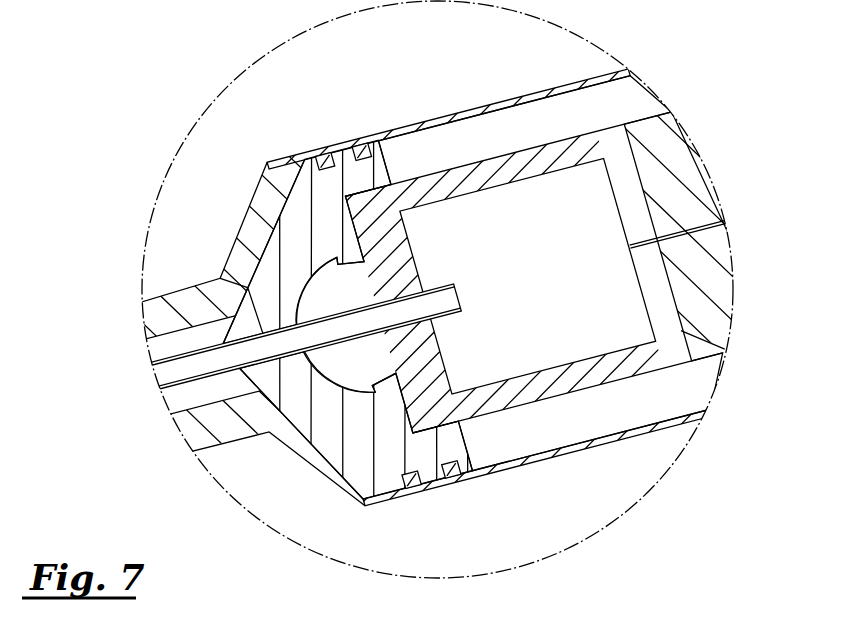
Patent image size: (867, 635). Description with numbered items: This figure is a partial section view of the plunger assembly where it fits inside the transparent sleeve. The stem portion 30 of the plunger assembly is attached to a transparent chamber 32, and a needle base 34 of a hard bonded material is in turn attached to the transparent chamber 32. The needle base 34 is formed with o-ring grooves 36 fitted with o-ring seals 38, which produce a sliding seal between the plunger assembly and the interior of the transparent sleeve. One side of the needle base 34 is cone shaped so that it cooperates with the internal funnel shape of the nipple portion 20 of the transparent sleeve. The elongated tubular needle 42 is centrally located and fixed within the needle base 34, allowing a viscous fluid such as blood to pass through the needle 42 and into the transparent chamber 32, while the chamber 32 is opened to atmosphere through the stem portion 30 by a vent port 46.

The nipple portion 20 is at (227, 437).
The stem portion 30 is at (702, 330).
The transparent chamber 32 is at (562, 208).
The needle base 34 is at (298, 235).
The o-ring grooves 36 is at (462, 450).
The o-ring seals 38 is at (361, 147).
The elongated tubular needle 42 is at (223, 273).
The vent port 46 is at (683, 227).